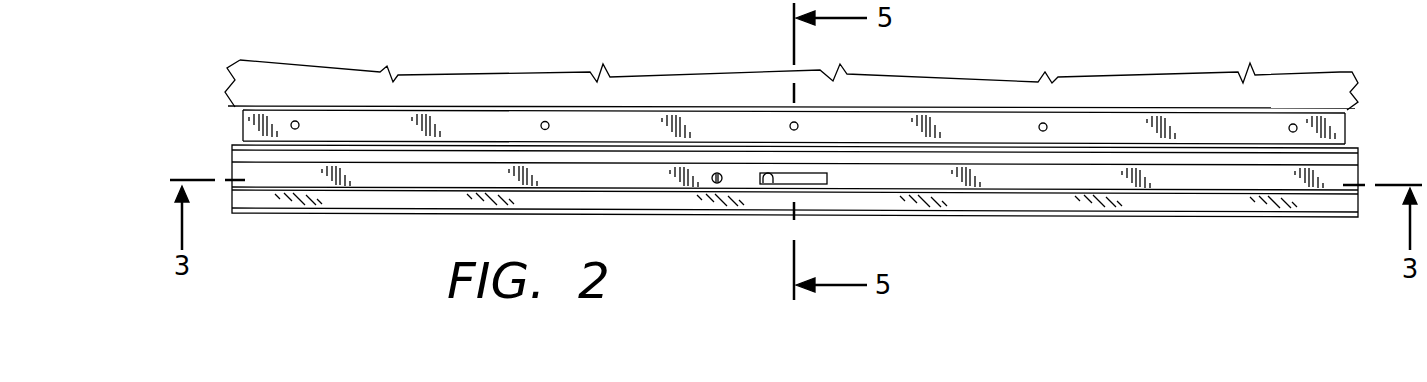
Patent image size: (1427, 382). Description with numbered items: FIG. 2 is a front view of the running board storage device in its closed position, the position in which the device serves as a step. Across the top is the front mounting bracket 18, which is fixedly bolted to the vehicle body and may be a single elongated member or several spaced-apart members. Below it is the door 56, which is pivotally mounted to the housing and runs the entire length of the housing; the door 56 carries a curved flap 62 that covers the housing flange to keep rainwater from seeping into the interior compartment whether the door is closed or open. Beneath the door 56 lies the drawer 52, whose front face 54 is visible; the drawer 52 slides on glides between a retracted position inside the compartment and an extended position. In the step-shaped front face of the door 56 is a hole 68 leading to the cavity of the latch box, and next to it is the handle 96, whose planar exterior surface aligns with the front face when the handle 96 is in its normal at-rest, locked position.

The front mounting bracket 18 is at (1012, 129).
The drawer 52 is at (363, 214).
The front face 54 is at (1208, 202).
The door 56 is at (379, 164).
The curved flap 62 is at (1112, 156).
The hole 68 is at (765, 174).
The handle 96 is at (827, 177).